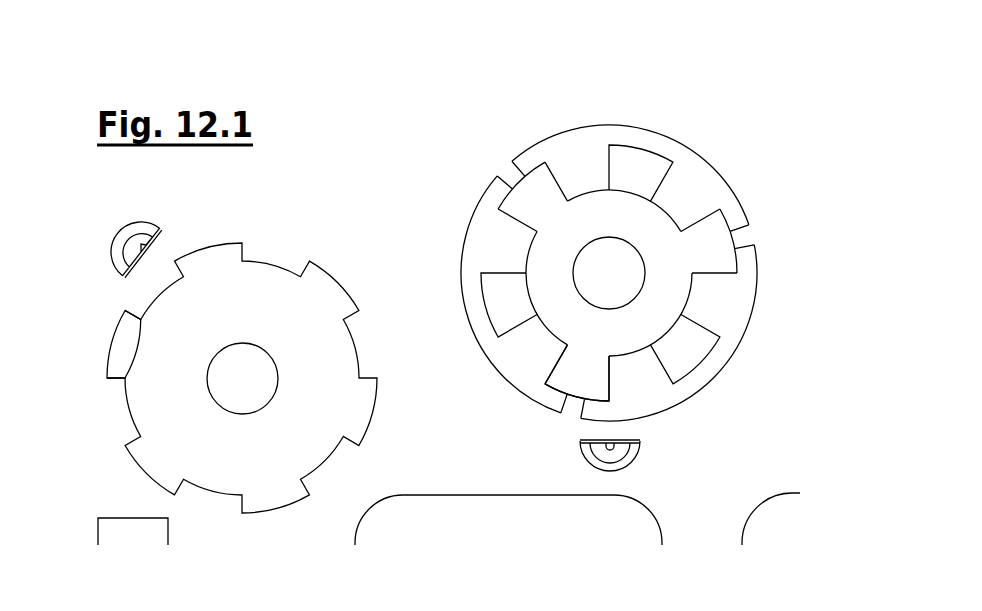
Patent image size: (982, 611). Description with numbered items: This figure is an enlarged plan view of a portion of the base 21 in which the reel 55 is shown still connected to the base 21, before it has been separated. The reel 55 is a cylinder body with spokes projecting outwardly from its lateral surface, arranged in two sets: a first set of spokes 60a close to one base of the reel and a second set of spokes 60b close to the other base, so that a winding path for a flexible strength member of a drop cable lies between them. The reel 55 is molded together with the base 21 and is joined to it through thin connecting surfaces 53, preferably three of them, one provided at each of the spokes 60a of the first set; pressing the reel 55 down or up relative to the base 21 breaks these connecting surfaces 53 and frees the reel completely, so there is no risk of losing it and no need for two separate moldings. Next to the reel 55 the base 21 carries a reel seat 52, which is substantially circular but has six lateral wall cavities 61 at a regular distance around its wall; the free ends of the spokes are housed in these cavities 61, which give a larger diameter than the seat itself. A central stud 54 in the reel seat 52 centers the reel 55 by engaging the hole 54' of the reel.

The base 21 is at (418, 275).
The reel seat 52 is at (214, 478).
The connecting surface 53 is at (765, 228).
The central stud 54 is at (261, 303).
The hole 54' is at (576, 198).
The reel 55 is at (666, 222).
The first set of spokes 60a is at (690, 344).
The second set of spokes 60b is at (572, 368).
The lateral wall cavity 61 is at (127, 340).